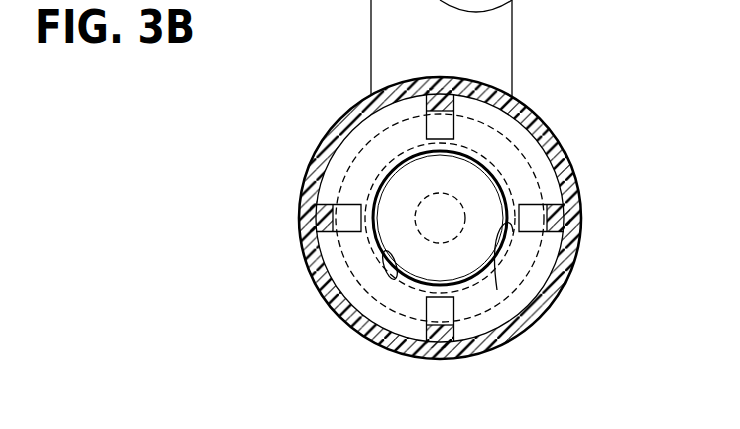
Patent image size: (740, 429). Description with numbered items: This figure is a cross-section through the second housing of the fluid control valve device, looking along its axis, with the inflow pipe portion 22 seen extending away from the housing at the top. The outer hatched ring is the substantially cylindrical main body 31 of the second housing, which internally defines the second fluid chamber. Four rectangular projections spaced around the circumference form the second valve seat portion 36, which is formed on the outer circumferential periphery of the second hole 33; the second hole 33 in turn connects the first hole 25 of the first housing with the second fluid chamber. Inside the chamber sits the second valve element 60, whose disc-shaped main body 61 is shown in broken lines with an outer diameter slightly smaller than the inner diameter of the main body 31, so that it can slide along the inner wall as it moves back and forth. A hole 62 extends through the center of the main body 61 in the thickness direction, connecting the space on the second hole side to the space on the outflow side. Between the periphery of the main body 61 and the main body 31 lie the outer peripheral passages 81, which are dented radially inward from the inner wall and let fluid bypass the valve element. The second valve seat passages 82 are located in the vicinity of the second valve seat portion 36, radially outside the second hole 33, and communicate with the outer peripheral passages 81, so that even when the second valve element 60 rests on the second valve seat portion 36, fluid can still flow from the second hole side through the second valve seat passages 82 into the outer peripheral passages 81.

The inflow pipe portion 22 is at (505, 33).
The main body 31 is at (528, 108).
The second valve seat portion 36 is at (433, 125).
The second valve seat passages 82 is at (340, 150).
The outer peripheral passages 81 is at (355, 300).
The second valve element 60 is at (536, 173).
The main body 61 is at (543, 193).
The hole 62 is at (447, 235).
The first hole 25 is at (396, 273).
The second hole 33 is at (497, 290).